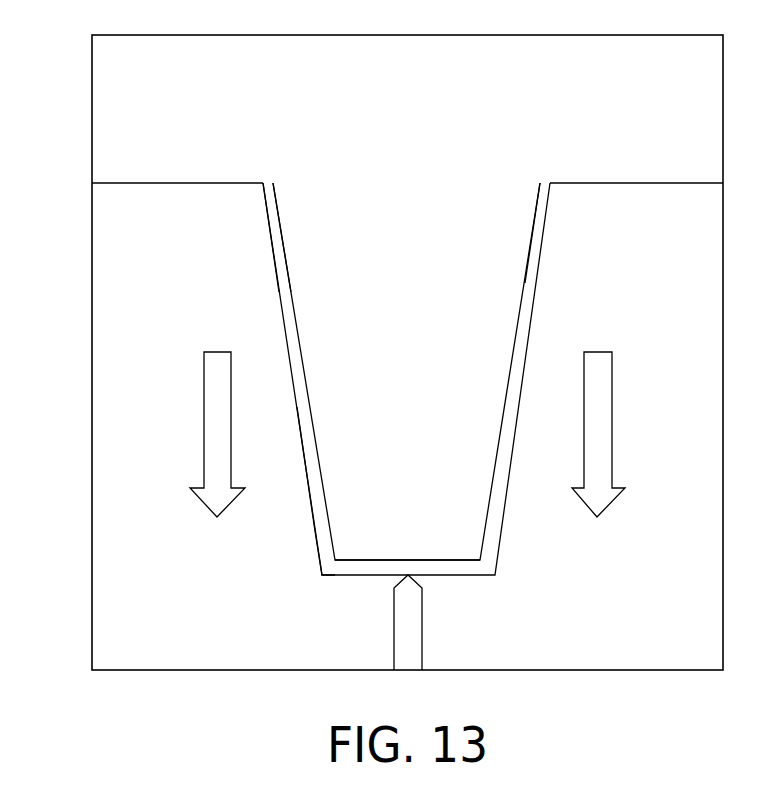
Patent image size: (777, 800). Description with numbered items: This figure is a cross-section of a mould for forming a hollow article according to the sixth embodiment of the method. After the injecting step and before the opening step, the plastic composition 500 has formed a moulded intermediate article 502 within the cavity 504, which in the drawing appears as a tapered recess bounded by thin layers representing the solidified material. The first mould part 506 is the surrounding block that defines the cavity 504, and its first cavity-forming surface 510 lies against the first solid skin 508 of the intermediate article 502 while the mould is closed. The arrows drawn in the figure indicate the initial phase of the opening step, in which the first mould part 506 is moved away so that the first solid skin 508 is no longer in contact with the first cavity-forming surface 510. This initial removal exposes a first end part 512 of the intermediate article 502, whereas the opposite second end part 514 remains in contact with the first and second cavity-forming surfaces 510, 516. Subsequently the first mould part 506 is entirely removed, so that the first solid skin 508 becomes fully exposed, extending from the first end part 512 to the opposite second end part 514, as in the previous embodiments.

The plastic composition 500 is at (442, 568).
The moulded intermediate article 502 is at (518, 410).
The cavity 504 is at (304, 407).
The first mould part 506 is at (148, 252).
The first solid skin 508 is at (319, 472).
The first cavity-forming surface 510 is at (279, 292).
The first end part 512 is at (279, 243).
The second end part 514 is at (315, 531).
The second cavity-forming surface 516 is at (525, 283).